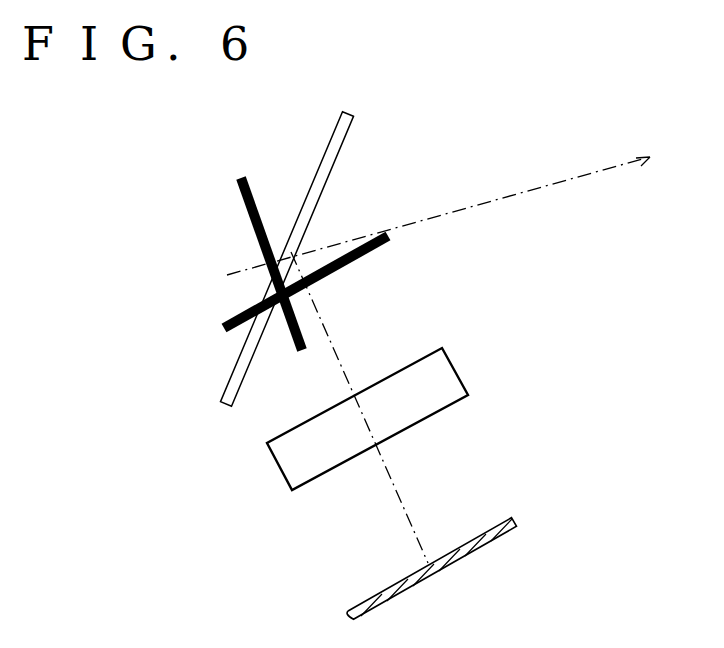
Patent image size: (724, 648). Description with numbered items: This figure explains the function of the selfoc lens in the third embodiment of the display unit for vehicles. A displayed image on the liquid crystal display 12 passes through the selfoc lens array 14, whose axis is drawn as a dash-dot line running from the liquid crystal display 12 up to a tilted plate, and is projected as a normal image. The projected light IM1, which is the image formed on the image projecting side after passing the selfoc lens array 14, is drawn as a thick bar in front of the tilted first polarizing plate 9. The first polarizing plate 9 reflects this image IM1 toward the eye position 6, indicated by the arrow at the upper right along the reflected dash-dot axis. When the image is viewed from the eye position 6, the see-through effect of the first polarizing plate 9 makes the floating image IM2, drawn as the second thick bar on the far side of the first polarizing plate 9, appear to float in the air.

The first polarizing plate 9 is at (340, 151).
The floating image IM2 is at (246, 225).
The projected light (image) IM1 is at (386, 241).
The selfoc lens array 14 is at (460, 375).
The liquid crystal display 12 is at (515, 524).
The eye position 6 is at (688, 142).